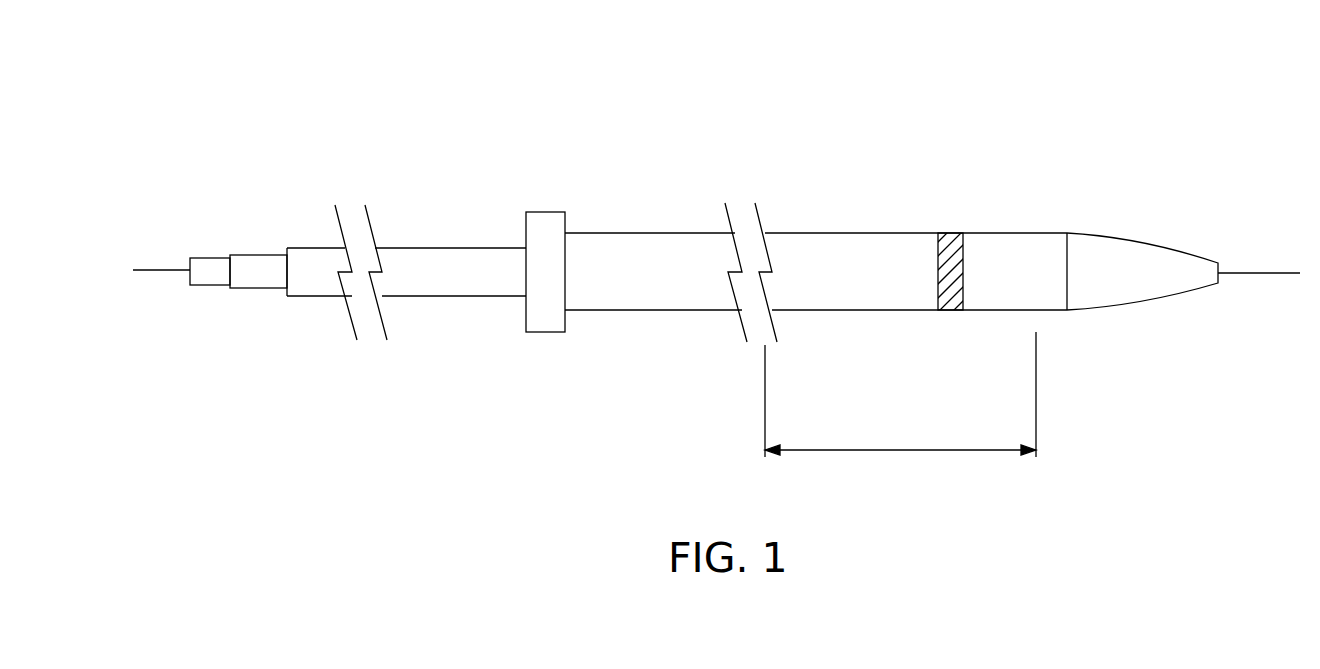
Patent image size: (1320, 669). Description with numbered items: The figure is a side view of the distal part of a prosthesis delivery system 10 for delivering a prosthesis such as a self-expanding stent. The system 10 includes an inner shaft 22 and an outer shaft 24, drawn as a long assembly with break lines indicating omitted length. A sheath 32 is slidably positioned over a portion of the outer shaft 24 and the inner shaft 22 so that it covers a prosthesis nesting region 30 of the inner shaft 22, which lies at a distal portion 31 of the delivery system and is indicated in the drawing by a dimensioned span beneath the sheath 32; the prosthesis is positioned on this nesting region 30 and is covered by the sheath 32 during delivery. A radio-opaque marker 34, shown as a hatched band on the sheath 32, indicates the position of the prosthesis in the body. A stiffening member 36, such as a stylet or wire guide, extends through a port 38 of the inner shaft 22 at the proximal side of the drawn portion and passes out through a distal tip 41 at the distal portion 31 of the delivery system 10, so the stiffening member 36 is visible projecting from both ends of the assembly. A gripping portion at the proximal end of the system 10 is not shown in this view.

The prosthesis delivery system 10 is at (813, 122).
The inner shaft 22 is at (247, 255).
The outer shaft 24 is at (420, 248).
The prosthesis nesting region 30 is at (905, 452).
The distal portion 31 is at (883, 165).
The sheath 32 is at (622, 224).
The radio-opaque marker 34 is at (950, 233).
The stiffening member 36 is at (163, 272).
The port 38 is at (187, 260).
The distal tip 41 is at (1123, 237).